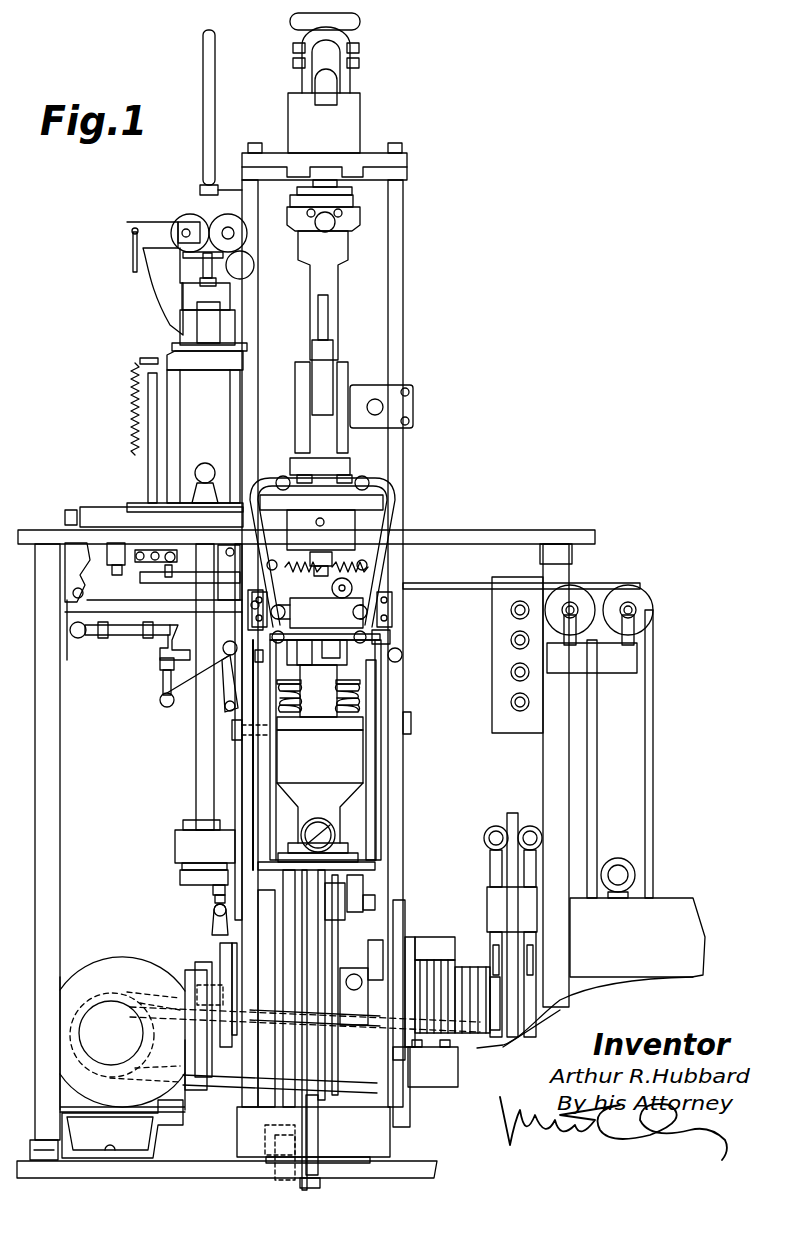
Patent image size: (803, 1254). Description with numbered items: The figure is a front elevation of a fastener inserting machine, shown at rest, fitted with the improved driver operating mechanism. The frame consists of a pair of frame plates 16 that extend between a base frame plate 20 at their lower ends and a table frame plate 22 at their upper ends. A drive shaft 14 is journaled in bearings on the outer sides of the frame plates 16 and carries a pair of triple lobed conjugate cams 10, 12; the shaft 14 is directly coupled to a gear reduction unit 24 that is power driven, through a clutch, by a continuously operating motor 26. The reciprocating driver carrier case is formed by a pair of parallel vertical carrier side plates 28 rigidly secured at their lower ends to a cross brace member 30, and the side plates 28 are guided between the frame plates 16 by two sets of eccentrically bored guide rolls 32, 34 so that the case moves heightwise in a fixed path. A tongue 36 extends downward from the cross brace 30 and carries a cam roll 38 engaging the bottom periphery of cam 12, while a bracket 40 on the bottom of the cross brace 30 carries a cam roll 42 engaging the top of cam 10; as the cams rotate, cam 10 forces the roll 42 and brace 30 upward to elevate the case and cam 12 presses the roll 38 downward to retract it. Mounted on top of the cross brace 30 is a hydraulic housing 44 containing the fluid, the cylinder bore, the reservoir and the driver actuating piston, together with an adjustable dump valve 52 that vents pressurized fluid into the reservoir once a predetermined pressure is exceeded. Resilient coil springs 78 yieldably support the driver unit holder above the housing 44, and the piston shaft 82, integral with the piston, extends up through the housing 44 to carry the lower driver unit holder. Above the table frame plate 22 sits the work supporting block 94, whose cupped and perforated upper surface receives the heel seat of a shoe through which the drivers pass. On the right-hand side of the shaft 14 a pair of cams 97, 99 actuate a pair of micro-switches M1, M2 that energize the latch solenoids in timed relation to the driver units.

The triple lobed conjugate cam 10 is at (335, 1075).
The triple lobed conjugate cam 12 is at (282, 1065).
The drive shaft 14 is at (275, 1012).
The frame plates 16 is at (253, 948).
The base frame plate 20 is at (420, 1162).
The table frame plate 22 is at (537, 531).
The gear reduction unit 24 is at (615, 952).
The motor 26 is at (97, 958).
The carrier side plates 28 is at (223, 707).
The cross brace member 30 is at (230, 918).
The guide rolls 32 is at (215, 678).
The guide rolls 34 is at (240, 742).
The tongue 36 is at (317, 1094).
The cam roll 38 is at (292, 1143).
The bracket 40 is at (370, 891).
The cam roll 42 is at (333, 918).
The housing 44 is at (352, 770).
The dump valve 52 is at (333, 836).
The coil springs 78 is at (358, 698).
The piston shaft 82 is at (320, 700).
The work supporting block 94 is at (358, 487).
The cam 97 is at (432, 965).
The cam 99 is at (437, 993).
The micro-switch M1 is at (453, 937).
The micro-switch M2 is at (442, 953).